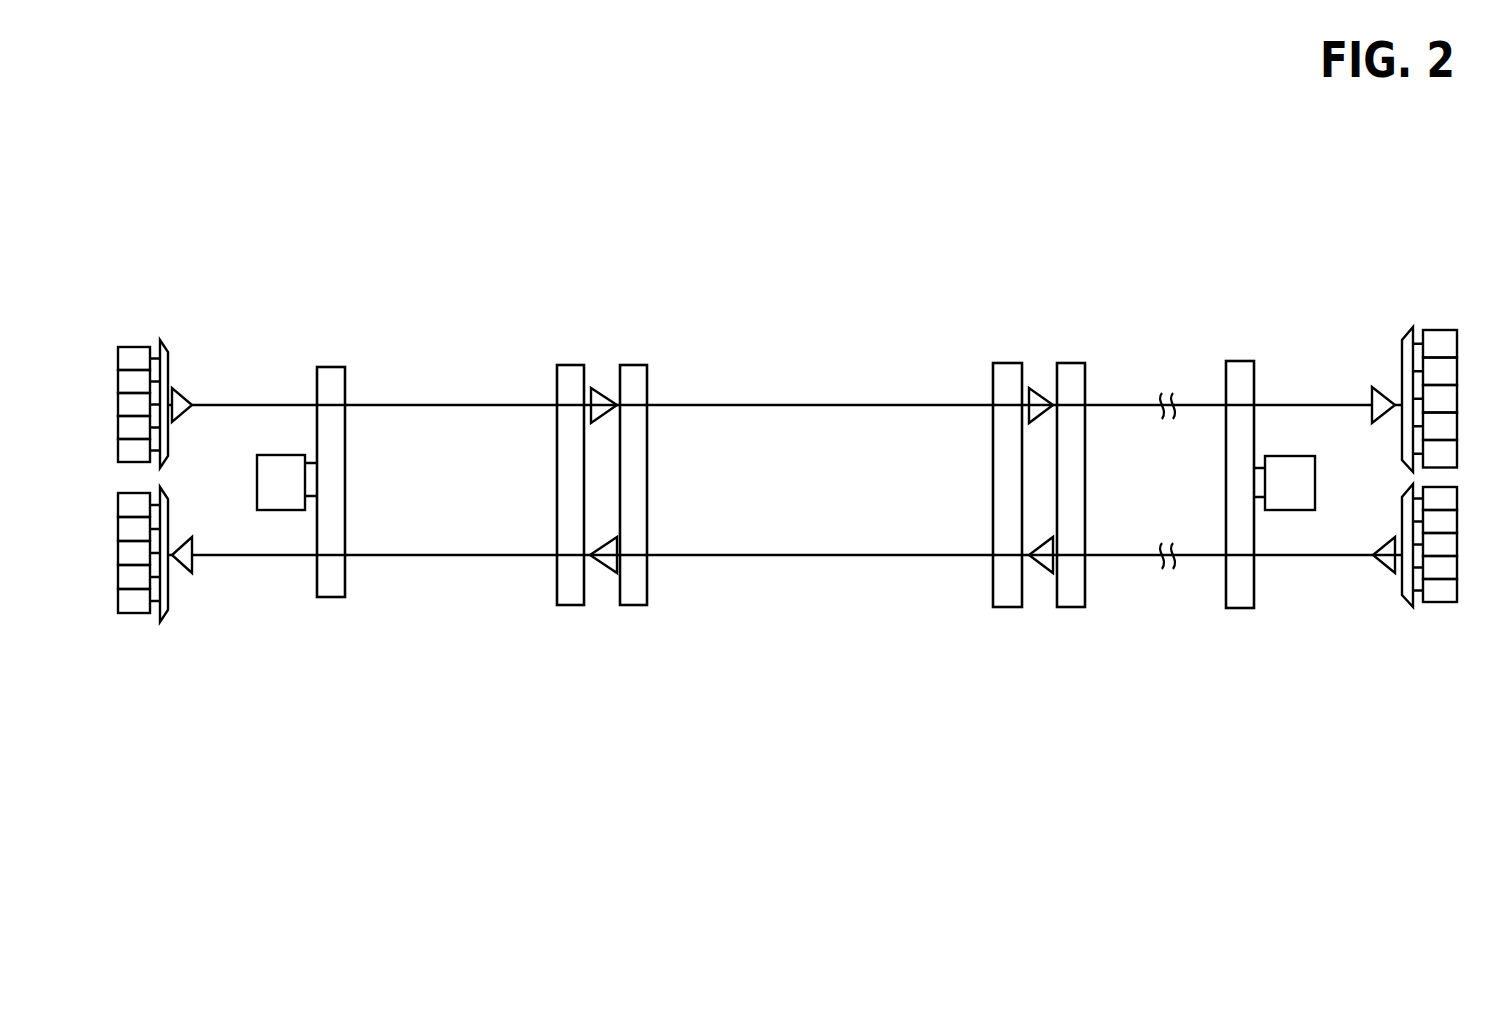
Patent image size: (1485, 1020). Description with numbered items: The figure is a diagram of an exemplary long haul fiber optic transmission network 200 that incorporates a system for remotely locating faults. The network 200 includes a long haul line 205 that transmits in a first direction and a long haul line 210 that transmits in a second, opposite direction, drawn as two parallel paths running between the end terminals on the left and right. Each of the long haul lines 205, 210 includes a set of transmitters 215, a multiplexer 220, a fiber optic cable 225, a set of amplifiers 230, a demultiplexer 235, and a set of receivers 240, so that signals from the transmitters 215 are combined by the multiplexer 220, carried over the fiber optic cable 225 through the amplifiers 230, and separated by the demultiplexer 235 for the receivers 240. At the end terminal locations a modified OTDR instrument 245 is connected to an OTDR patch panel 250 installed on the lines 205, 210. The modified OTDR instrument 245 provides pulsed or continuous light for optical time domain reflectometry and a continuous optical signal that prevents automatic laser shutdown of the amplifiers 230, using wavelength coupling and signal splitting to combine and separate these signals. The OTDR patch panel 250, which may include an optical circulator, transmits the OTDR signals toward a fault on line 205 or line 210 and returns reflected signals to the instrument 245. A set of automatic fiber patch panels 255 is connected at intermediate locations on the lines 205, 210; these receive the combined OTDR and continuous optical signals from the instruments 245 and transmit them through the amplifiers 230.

The long haul fiber optic transmission network 200 is at (466, 101).
The long haul line 205 is at (321, 263).
The long haul line 210 is at (379, 645).
The transmitters 215 is at (130, 346).
The multiplexer 220 is at (163, 340).
The fiber optic cable 225 is at (255, 404).
The amplifiers 230 is at (179, 394).
The demultiplexer 235 is at (163, 616).
The receivers 240 is at (124, 616).
The modified OTDR instrument 245 is at (256, 490).
The OTDR patch panel 250 is at (346, 377).
The automatic fiber patch panels 255 is at (558, 374).